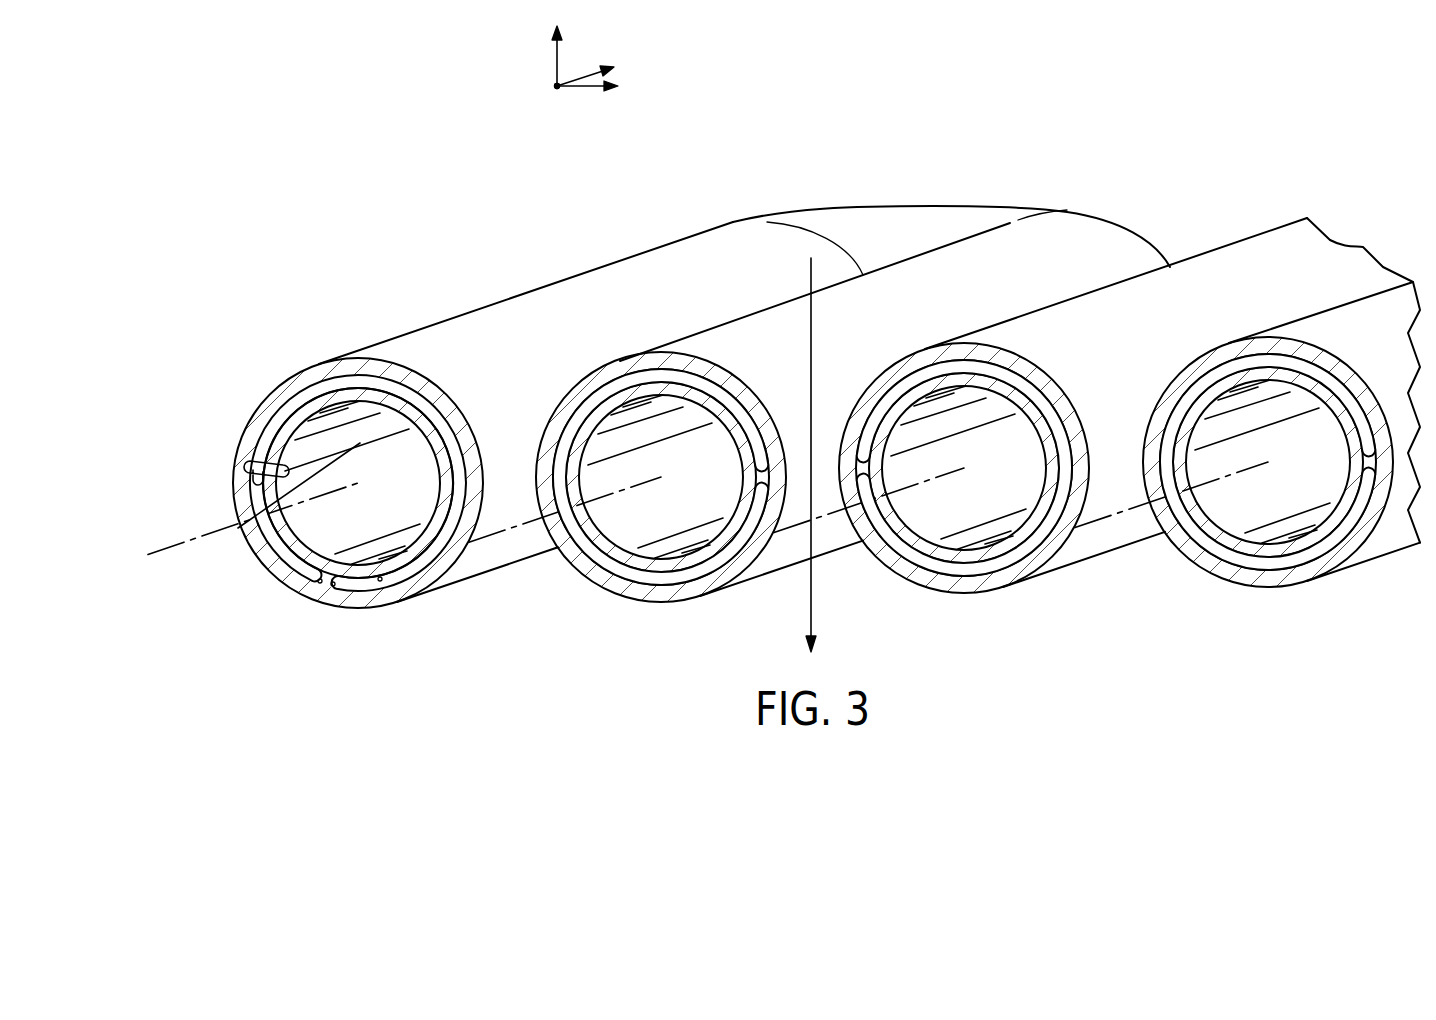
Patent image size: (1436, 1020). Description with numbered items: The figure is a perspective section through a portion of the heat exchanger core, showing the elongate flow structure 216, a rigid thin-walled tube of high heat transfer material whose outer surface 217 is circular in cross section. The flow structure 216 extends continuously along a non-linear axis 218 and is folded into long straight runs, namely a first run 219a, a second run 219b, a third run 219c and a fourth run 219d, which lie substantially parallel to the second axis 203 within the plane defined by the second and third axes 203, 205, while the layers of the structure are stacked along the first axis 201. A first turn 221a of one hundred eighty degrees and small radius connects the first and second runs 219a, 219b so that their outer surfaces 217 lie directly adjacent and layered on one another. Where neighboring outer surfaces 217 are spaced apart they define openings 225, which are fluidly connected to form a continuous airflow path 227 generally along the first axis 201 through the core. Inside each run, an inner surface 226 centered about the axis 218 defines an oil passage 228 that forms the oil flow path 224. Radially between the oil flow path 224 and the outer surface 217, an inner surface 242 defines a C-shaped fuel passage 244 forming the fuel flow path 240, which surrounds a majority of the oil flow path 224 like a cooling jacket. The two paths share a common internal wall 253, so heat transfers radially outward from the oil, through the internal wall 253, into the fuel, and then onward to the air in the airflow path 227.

The first axis 201 is at (555, 68).
The second axis 203 is at (585, 70).
The third axis 205 is at (583, 92).
The elongate flow structure 216 is at (440, 249).
The outer surface 217 is at (566, 344).
The non-linear axis 218 is at (188, 545).
The first run 219a is at (571, 283).
The second run 219b is at (922, 252).
The third run 219c is at (1128, 296).
The fourth run 219d is at (1341, 310).
The first turn 221a is at (980, 225).
The oil flow path 224 is at (312, 440).
The openings 225 is at (633, 328).
The inner surface 226 is at (300, 528).
The airflow path 227 is at (808, 351).
The oil passage 228 is at (428, 482).
The fuel flow path 240 is at (333, 592).
The inner surface 242 is at (380, 580).
The fuel passage 244 is at (313, 582).
The internal wall 253 is at (425, 548).